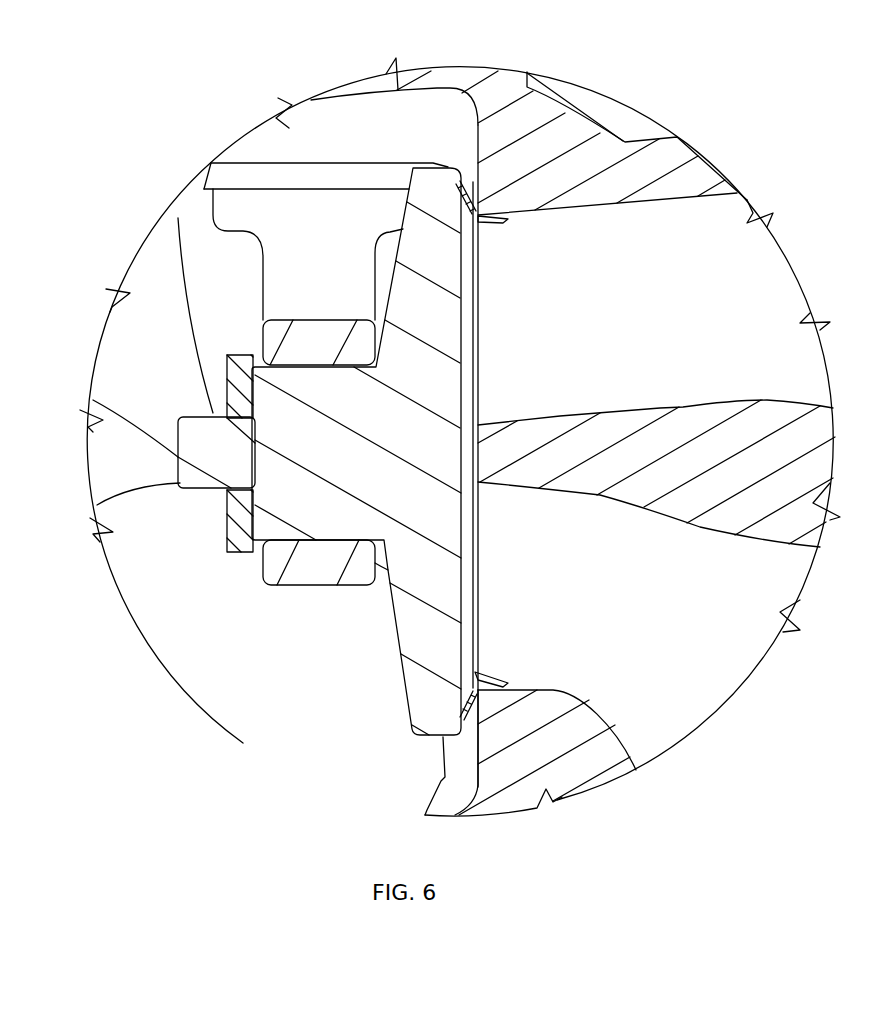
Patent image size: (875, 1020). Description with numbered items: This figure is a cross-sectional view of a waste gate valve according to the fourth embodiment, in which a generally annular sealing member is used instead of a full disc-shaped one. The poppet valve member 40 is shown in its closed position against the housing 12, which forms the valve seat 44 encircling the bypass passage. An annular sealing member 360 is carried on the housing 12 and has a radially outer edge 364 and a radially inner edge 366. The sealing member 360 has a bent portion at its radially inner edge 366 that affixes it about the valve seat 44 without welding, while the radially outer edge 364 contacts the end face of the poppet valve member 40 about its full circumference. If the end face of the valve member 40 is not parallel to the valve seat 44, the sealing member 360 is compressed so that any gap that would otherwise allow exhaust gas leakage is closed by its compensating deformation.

The housing 12 is at (690, 412).
The poppet valve member 40 is at (395, 617).
The valve seat 44 is at (453, 748).
The annular sealing member 360 is at (488, 678).
The radially outer edge 364 is at (463, 177).
The radially inner edge 366 is at (509, 222).